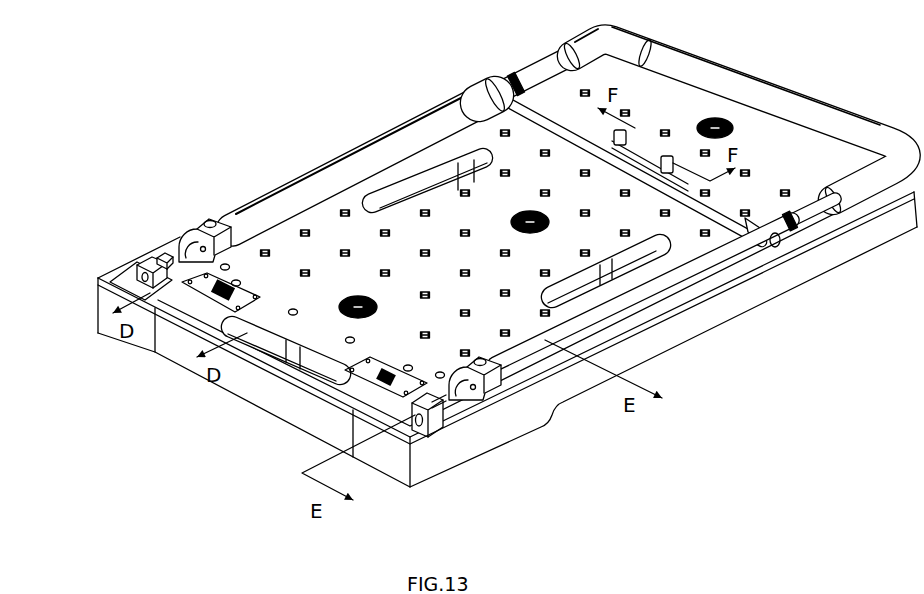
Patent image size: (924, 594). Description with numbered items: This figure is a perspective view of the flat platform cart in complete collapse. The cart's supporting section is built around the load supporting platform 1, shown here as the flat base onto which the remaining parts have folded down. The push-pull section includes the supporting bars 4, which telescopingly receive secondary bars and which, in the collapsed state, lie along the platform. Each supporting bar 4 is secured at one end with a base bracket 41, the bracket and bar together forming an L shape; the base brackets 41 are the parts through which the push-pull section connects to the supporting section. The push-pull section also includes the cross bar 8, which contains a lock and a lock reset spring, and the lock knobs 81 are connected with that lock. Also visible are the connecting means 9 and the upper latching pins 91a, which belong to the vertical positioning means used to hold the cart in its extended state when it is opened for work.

The load supporting platform 1 is at (158, 353).
The supporting bars 4 is at (350, 167).
The cross bar 8 is at (270, 392).
The connecting means 9 is at (133, 260).
The base bracket 41 is at (193, 222).
The lock knobs 81 is at (630, 140).
The upper latching pins 91a is at (163, 258).